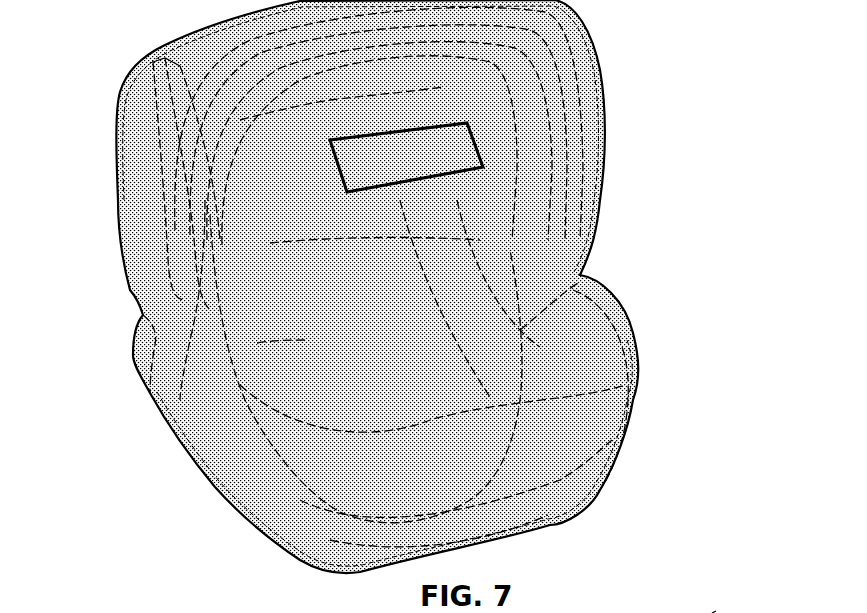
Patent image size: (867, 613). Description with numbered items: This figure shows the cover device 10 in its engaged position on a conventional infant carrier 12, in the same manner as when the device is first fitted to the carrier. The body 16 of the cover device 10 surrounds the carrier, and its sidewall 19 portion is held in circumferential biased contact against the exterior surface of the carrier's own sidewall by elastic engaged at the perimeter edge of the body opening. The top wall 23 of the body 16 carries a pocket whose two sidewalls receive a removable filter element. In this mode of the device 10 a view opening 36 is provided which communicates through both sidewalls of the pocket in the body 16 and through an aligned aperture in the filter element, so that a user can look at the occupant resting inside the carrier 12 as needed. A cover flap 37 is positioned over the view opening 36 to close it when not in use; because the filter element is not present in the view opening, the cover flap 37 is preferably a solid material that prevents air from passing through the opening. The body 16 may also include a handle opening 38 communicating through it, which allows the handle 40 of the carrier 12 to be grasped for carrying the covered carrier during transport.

The cover device 10 is at (633, 168).
The infant carrier 12 is at (213, 460).
The body 16 is at (578, 355).
The sidewall 19 is at (135, 216).
The top wall 23 is at (540, 178).
The view opening 36 is at (425, 190).
The cover flap 37 is at (458, 147).
The handle opening 38 is at (715, 612).
The handle 40 is at (150, 352).